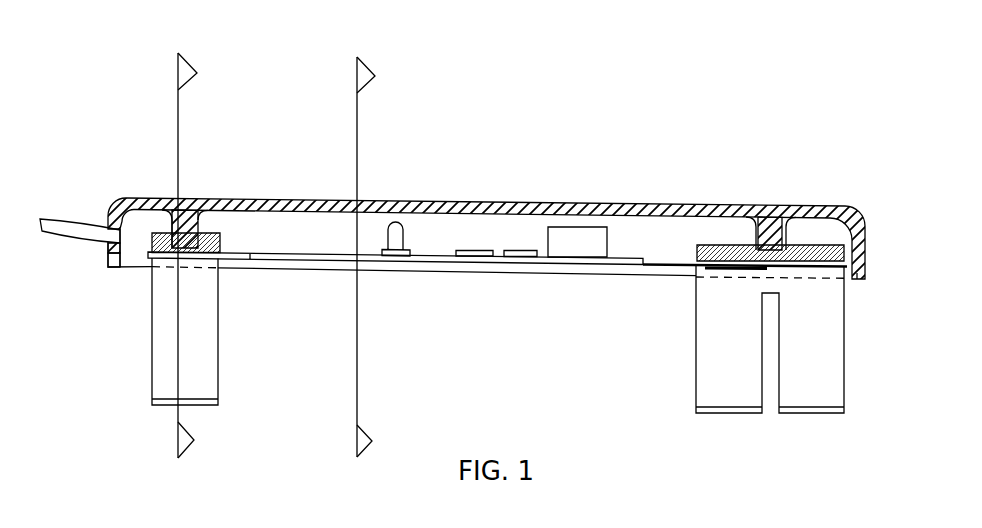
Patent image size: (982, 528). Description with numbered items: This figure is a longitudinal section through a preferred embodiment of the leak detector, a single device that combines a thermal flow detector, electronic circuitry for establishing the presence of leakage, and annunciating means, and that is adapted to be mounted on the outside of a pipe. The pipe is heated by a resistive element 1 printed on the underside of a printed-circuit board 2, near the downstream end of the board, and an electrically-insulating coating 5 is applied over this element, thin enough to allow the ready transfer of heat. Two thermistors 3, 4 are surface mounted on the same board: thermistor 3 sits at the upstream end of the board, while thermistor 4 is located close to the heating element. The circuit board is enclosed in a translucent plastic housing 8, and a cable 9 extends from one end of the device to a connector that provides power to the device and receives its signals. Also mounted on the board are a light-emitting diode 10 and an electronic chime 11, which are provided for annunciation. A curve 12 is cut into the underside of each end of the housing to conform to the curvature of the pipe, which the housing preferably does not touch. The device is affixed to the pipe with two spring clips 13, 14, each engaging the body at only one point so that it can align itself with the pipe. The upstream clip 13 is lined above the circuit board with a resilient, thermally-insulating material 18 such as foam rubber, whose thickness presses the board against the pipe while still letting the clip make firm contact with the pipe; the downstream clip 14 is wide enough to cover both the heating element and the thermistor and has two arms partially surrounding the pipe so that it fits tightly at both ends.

The resistive element 1 is at (723, 270).
The printed-circuit board 2 is at (419, 263).
The thermistor 3 is at (177, 262).
The thermistor 4 is at (831, 280).
The electrically-insulating coating 5 is at (740, 271).
The translucent plastic housing 8 is at (245, 197).
The cable 9 is at (80, 220).
The light-emitting diode 10 is at (399, 222).
The electronic chime 11 is at (582, 227).
The curve 12 is at (858, 280).
The spring clip 13 is at (218, 343).
The spring clip 14 is at (696, 366).
The resilient thermally-insulating material 18 is at (734, 248).